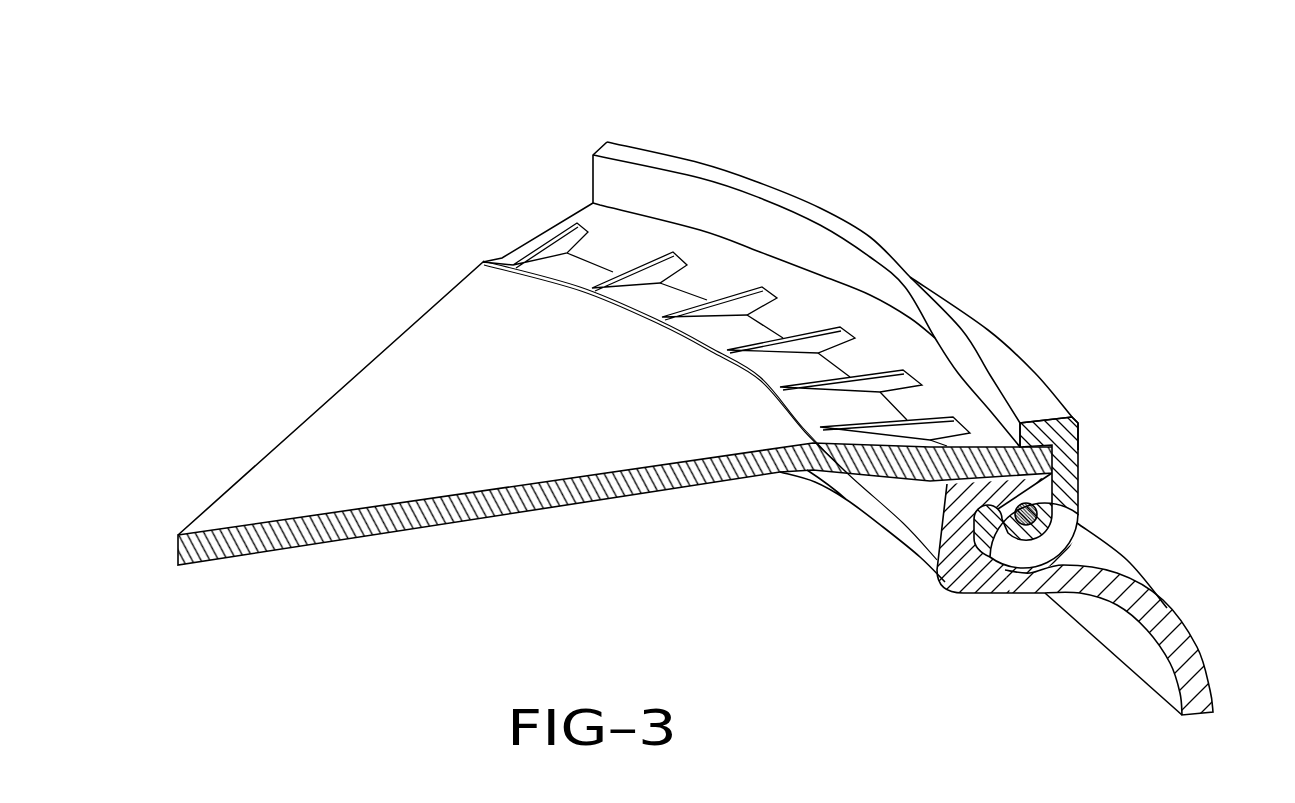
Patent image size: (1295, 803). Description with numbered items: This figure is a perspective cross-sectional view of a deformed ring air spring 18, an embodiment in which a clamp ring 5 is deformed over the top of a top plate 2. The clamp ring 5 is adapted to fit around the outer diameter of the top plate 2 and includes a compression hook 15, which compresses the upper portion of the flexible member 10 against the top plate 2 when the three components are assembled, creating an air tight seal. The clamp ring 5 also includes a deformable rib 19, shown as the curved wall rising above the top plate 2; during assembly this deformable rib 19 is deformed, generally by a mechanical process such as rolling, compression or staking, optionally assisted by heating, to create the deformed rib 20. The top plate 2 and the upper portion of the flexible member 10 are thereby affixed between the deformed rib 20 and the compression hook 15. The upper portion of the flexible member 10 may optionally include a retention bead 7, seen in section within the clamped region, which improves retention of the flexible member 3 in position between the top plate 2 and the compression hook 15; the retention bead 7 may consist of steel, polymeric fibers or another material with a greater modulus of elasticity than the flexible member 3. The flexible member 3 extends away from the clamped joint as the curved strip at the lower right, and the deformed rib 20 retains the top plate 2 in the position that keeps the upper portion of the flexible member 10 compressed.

The top plate 2 is at (673, 476).
The flexible member 3 is at (1162, 620).
The clamp ring 5 is at (1030, 557).
The retention bead 7 is at (1034, 511).
The upper portion of the flexible member 10 is at (1033, 487).
The compression hook 15 is at (988, 518).
The deformed ring air spring 18 is at (788, 611).
The deformable rib 19 is at (648, 180).
The deformed rib 20 is at (1033, 432).